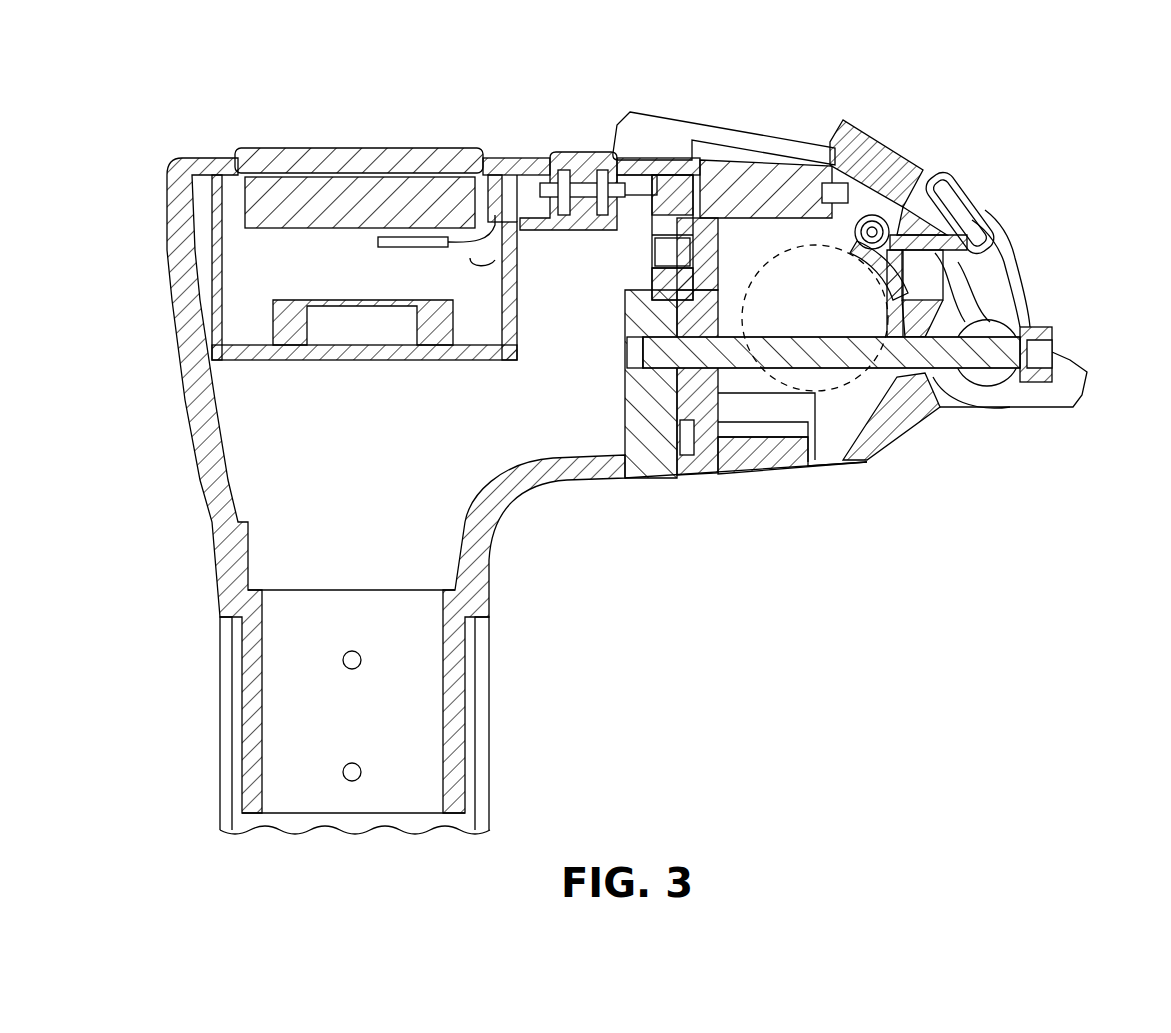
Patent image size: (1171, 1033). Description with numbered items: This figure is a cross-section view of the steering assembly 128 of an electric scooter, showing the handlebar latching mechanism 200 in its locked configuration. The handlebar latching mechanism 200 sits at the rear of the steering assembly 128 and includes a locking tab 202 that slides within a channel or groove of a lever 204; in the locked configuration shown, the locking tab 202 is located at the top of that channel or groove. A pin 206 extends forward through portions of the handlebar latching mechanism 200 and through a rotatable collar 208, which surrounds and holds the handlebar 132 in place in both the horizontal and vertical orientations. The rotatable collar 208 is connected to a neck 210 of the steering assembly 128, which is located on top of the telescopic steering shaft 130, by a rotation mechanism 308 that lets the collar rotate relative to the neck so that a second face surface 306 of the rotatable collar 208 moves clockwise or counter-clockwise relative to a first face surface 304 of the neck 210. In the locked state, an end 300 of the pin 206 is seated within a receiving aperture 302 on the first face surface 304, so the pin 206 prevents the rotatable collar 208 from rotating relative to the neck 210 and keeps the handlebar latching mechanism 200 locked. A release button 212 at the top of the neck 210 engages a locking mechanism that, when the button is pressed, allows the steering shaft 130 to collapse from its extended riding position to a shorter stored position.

The steering assembly 128 is at (294, 103).
The steering shaft 130 is at (220, 715).
The handlebar 132 is at (885, 440).
The handlebar latching mechanism 200 is at (1052, 208).
The locking tab 202 is at (960, 198).
The lever 204 is at (865, 146).
The pin 206 is at (1042, 325).
The rotatable collar 208 is at (765, 460).
The neck 210 is at (208, 156).
The release button 212 is at (381, 148).
The end of pin 300 is at (657, 357).
The receiving aperture 302 is at (635, 348).
The first face surface 304 is at (688, 473).
The second face surface 306 is at (692, 142).
The rotation mechanism 308 is at (663, 252).